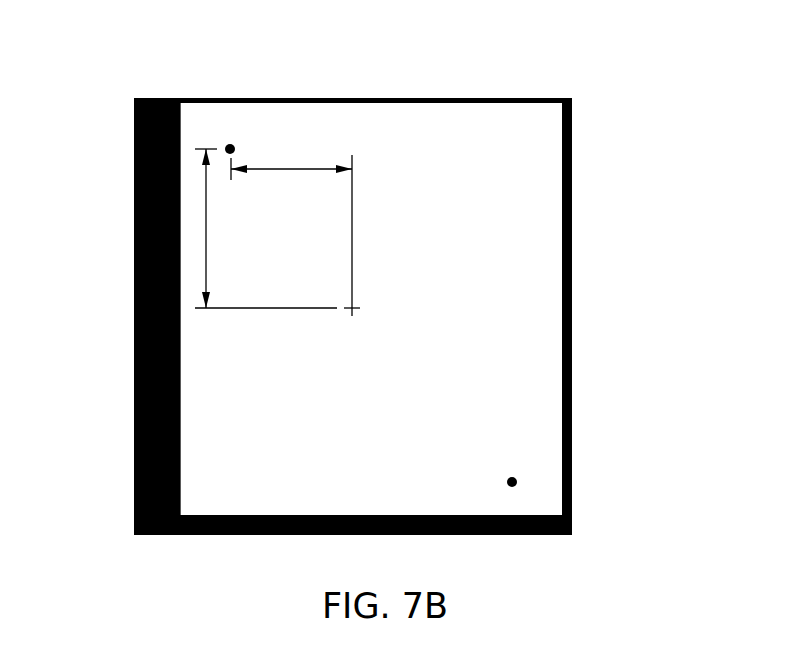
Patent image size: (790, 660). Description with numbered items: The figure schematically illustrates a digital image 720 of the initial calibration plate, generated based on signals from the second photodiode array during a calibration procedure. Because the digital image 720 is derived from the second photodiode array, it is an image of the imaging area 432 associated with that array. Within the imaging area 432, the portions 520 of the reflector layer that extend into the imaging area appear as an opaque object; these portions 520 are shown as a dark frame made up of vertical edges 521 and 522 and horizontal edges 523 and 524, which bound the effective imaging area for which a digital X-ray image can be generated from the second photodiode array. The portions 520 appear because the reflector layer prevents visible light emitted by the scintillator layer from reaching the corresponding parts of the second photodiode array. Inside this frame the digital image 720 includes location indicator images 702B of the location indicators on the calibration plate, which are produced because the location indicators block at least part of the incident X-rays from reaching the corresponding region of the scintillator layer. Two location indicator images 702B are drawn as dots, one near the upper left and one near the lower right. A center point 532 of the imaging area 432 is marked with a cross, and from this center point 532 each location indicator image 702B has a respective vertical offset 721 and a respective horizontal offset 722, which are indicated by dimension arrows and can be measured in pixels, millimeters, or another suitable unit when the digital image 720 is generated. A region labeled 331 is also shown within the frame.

The digital image 720 is at (294, 288).
The imaging area 432 is at (605, 109).
The portions of reflector layer 520 is at (133, 300).
The vertical edge 521 is at (180, 424).
The vertical edge 522 is at (562, 313).
The horizontal edge 523 is at (535, 103).
The horizontal edge 524 is at (441, 515).
The inner print area 331 is at (373, 406).
The location indicator images 702B is at (230, 144).
The vertical offset 721 is at (206, 237).
The horizontal offset 722 is at (262, 172).
The center point 532 is at (355, 302).